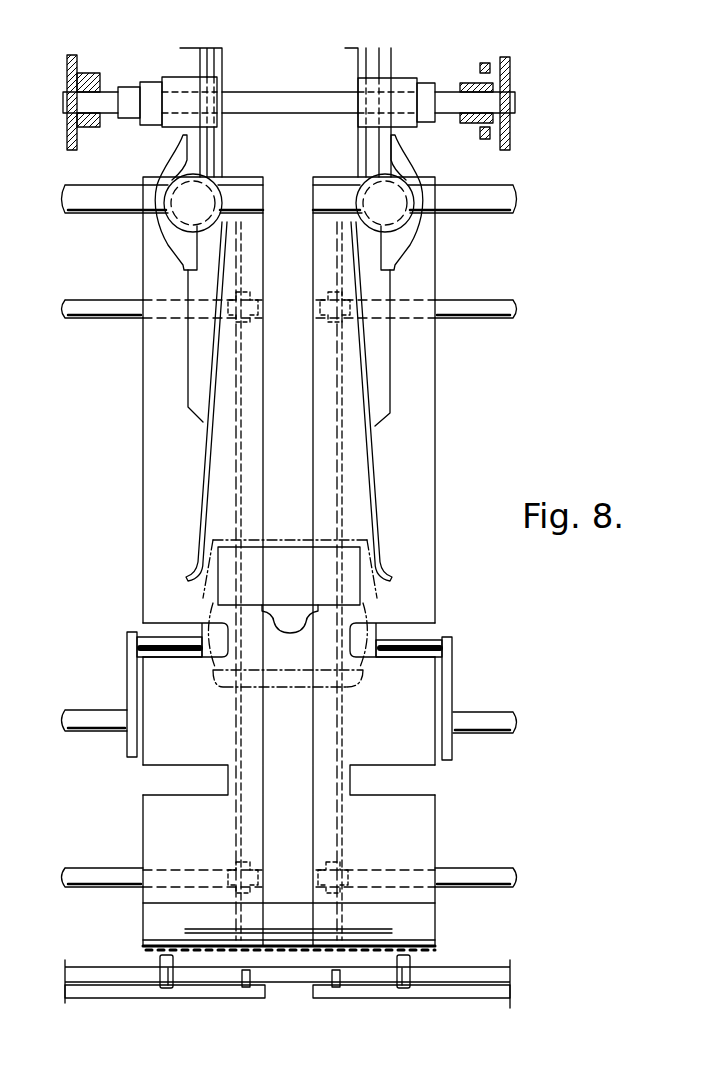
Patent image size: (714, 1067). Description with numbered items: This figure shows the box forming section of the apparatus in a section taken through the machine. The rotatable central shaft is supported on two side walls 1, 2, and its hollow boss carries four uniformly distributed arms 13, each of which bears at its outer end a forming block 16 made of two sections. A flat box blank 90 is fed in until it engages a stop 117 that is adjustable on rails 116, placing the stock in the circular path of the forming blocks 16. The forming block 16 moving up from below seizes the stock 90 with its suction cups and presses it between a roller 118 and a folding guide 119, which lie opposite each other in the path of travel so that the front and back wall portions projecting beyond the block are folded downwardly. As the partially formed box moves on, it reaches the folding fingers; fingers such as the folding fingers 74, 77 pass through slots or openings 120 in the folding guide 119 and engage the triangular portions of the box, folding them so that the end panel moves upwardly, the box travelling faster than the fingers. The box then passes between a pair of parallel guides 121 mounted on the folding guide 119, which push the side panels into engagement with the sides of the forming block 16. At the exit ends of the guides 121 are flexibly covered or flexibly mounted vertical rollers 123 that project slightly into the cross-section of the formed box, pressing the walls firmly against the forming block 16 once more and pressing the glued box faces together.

The side wall 1 is at (67, 142).
The side wall 2 is at (512, 133).
The rollers 123 is at (325, 177).
The parallel guides 121 is at (197, 472).
The box blank 90 is at (280, 540).
The forming block 16 is at (305, 589).
The arms 13 is at (290, 633).
The slots 120 is at (167, 623).
The folding finger 74 is at (157, 637).
The folding finger 77 is at (423, 640).
The folding guide 119 is at (152, 828).
The roller 118 is at (157, 926).
The rails 116 is at (98, 987).
The stop 117 is at (177, 972).